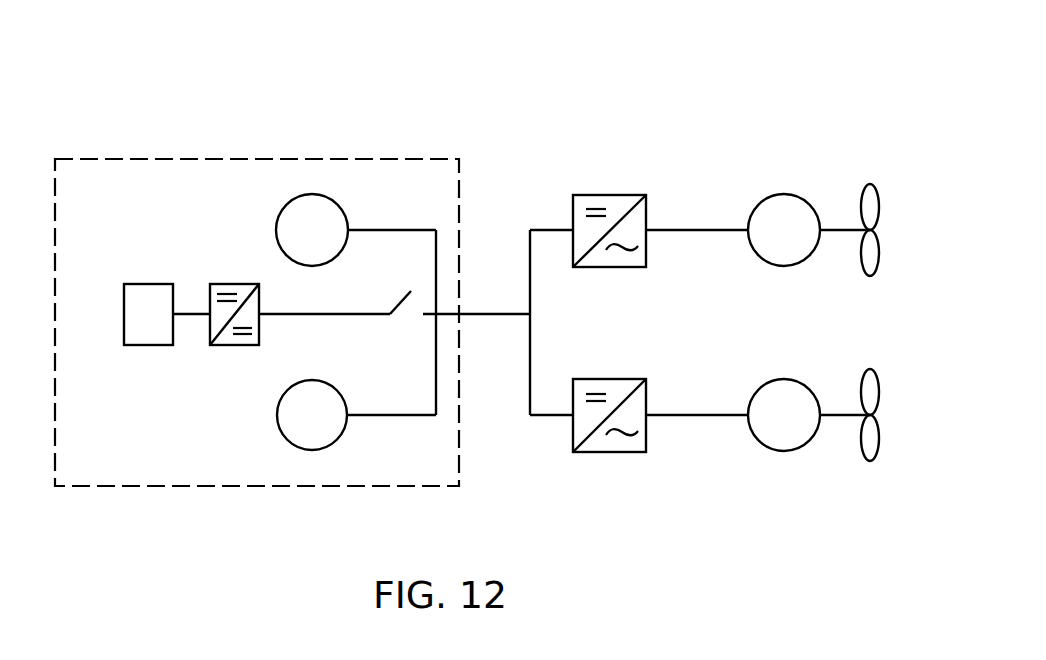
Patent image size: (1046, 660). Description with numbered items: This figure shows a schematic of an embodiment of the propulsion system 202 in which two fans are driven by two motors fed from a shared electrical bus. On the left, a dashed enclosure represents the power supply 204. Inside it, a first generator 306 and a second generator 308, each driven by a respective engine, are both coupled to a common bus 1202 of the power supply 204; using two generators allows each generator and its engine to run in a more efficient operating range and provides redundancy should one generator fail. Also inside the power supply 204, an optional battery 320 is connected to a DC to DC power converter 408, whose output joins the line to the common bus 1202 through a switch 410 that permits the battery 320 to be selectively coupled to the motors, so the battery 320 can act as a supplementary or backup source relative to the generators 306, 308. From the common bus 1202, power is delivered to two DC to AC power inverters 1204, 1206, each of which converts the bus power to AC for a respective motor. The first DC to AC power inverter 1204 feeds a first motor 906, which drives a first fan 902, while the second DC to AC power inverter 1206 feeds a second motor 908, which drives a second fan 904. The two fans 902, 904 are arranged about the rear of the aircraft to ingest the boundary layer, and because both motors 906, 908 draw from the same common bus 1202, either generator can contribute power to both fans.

The propulsion system 202 is at (704, 54).
The power supply 204 is at (172, 158).
The first generator 306 is at (312, 194).
The second generator 308 is at (315, 451).
The battery 320 is at (146, 284).
The DC to DC power converter 408 is at (233, 284).
The switch 410 is at (418, 289).
The common bus 1202 is at (501, 317).
The first DC to AC power inverter 1204 is at (606, 195).
The second DC to AC power inverter 1206 is at (606, 379).
The first fan 902 is at (870, 184).
The second fan 904 is at (870, 369).
The first motor 906 is at (786, 194).
The second motor 908 is at (786, 379).